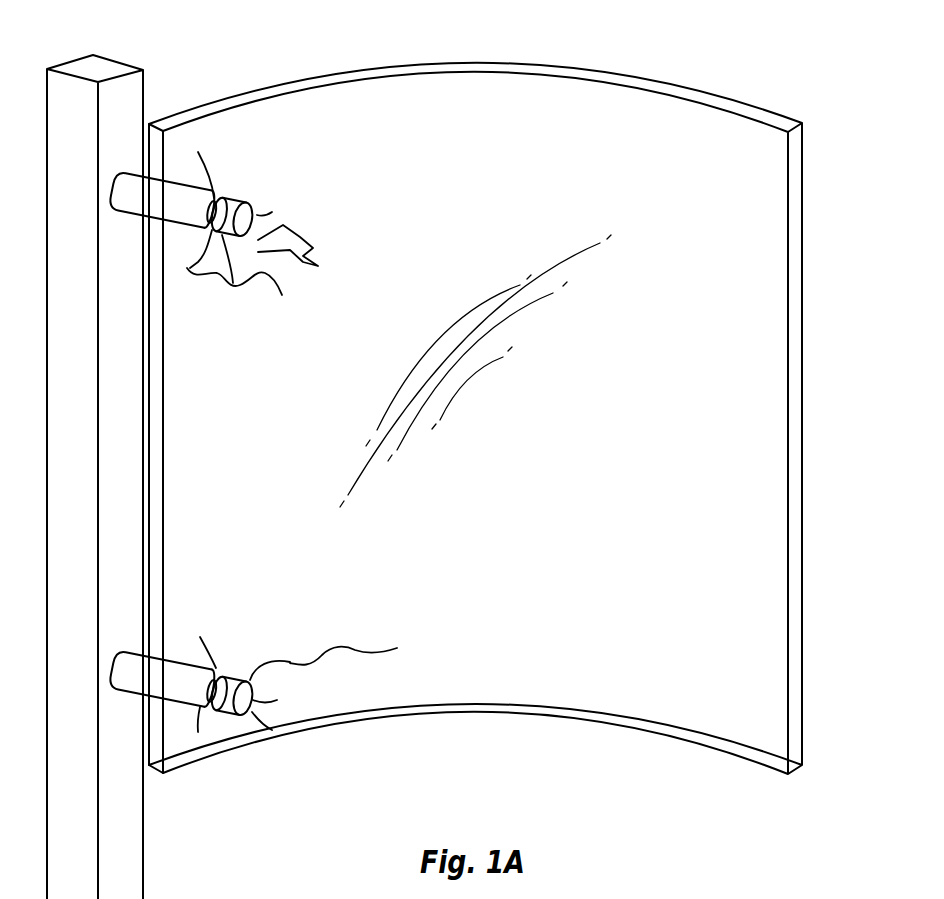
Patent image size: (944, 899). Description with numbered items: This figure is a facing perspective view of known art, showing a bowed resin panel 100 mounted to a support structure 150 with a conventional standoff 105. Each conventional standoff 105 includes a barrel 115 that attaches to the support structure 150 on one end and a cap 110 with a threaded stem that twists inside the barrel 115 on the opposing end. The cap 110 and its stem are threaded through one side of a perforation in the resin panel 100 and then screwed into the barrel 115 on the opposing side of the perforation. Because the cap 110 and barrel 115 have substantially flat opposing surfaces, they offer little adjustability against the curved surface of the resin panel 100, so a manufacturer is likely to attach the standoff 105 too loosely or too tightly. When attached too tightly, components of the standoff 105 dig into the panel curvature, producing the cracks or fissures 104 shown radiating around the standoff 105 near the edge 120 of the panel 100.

The resin panel 100 is at (762, 302).
The cracks or fissures 104 is at (280, 230).
The conventional standoff 105 is at (193, 178).
The standoff cap 110 is at (233, 283).
The barrel 115 is at (138, 196).
The panel edge 120 is at (155, 155).
The support structure 150 is at (72, 88).